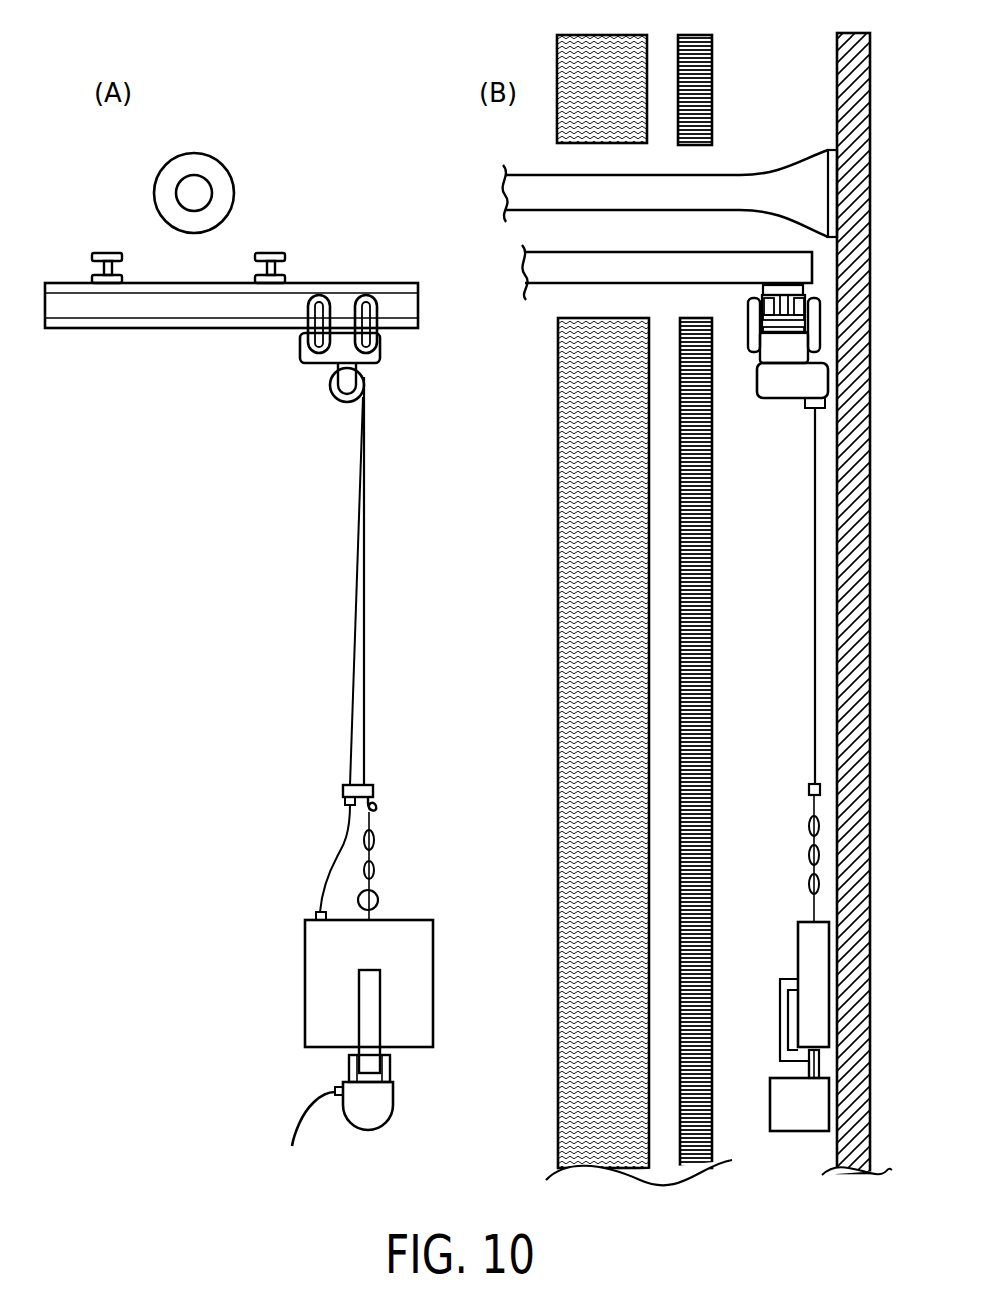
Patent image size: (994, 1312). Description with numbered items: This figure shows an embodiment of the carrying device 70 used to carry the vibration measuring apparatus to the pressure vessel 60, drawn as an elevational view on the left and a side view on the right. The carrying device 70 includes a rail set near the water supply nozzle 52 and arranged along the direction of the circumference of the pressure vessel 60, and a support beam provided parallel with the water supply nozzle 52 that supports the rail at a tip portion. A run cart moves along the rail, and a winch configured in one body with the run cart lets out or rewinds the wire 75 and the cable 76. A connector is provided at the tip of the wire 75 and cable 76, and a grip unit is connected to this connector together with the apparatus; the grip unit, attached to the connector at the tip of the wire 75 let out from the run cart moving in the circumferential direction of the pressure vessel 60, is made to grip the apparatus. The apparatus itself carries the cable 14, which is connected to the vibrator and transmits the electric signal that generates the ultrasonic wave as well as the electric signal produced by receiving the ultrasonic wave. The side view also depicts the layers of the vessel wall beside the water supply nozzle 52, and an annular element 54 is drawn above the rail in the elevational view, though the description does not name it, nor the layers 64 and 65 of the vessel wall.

The cable 14 is at (298, 1121).
The water supply nozzle 52 is at (529, 175).
The ring 54 is at (221, 156).
The pressure vessel 60 is at (848, 765).
The heat insulating layer 64 is at (683, 630).
The refractory layer 65 is at (558, 548).
The carrying device 70 is at (114, 199).
The wire 75 is at (364, 731).
The cable 76 is at (356, 667).